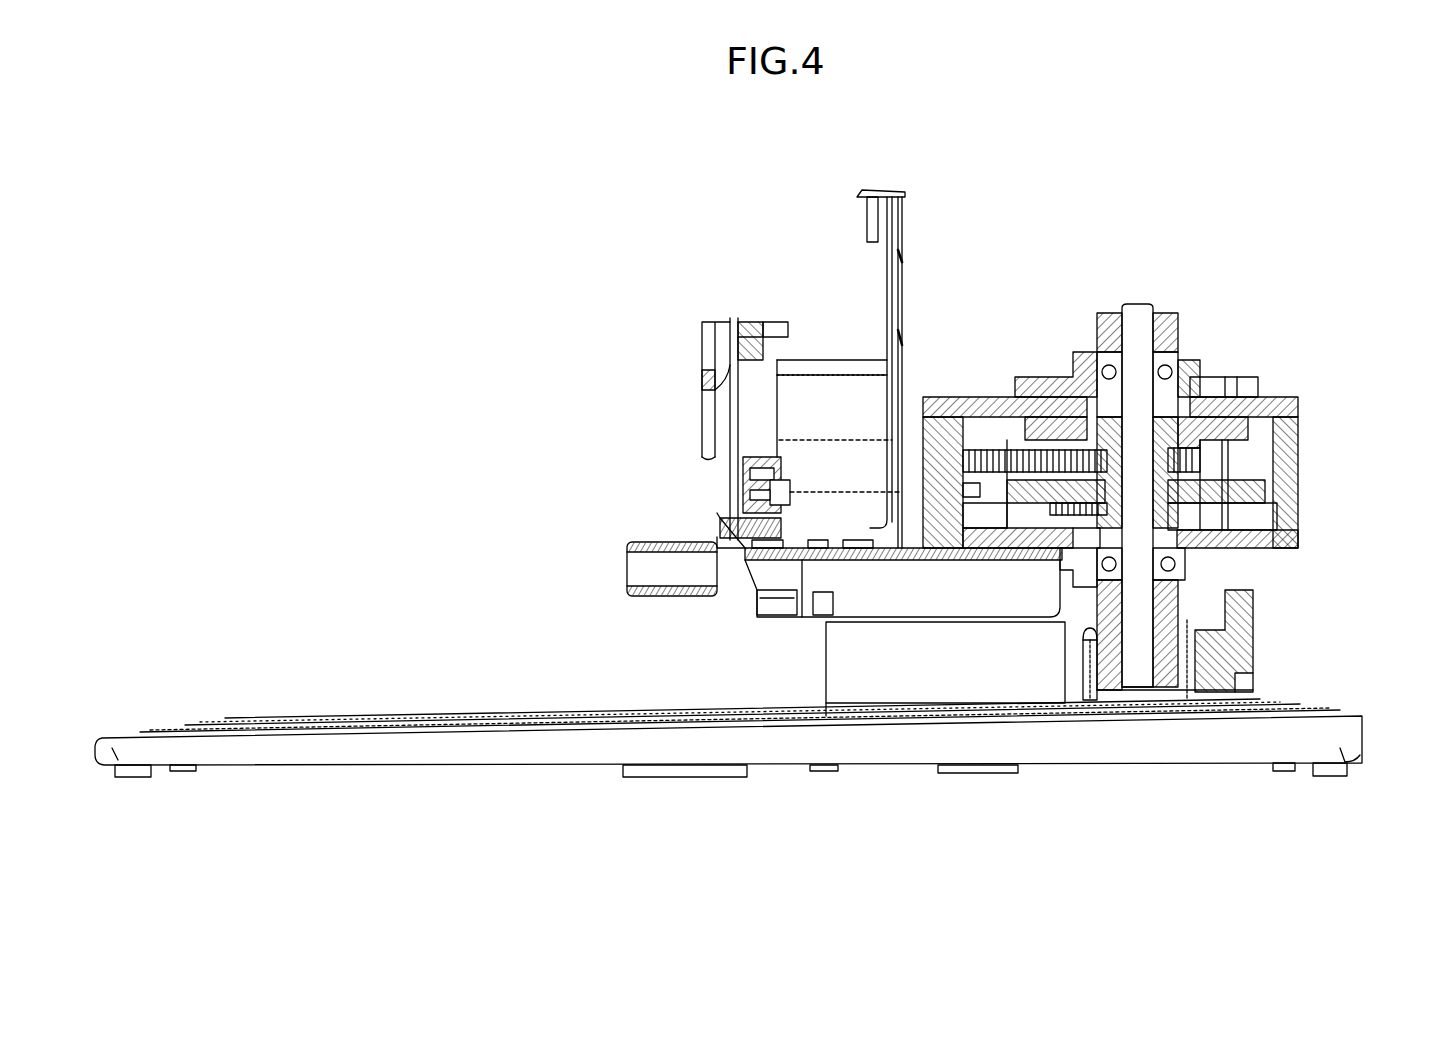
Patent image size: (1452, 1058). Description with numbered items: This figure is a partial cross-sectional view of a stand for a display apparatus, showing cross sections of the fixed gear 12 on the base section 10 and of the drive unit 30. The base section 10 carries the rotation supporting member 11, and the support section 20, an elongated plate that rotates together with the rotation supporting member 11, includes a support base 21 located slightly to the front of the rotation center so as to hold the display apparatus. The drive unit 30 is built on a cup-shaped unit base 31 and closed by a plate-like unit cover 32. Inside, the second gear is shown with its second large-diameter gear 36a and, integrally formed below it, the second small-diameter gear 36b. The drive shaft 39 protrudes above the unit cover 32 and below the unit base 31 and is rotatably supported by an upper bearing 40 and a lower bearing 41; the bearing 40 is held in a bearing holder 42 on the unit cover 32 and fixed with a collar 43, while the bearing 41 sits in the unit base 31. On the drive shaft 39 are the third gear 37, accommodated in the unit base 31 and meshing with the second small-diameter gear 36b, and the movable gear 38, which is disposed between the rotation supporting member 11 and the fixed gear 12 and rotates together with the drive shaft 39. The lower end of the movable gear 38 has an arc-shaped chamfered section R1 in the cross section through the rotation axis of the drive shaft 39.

The base section 10 is at (250, 700).
The rotation supporting member 11 is at (848, 662).
The fixed gear 12 is at (1256, 651).
The support section 20 is at (852, 588).
The support base 21 is at (876, 224).
The drive unit 30 is at (1181, 450).
The unit base 31 is at (742, 481).
The unit cover 32 is at (1297, 406).
The second large-diameter gear 36a is at (1208, 456).
The second small-diameter gear 36b is at (1003, 455).
The third gear 37 is at (1262, 490).
The movable gear 38 is at (1112, 692).
The drive shaft 39 is at (1145, 304).
The bearing 40 is at (1165, 357).
The bearing 41 is at (1184, 562).
The bearing holder 42 is at (1078, 330).
The collar 43 is at (1103, 318).
The chamfered section R1 is at (1080, 690).